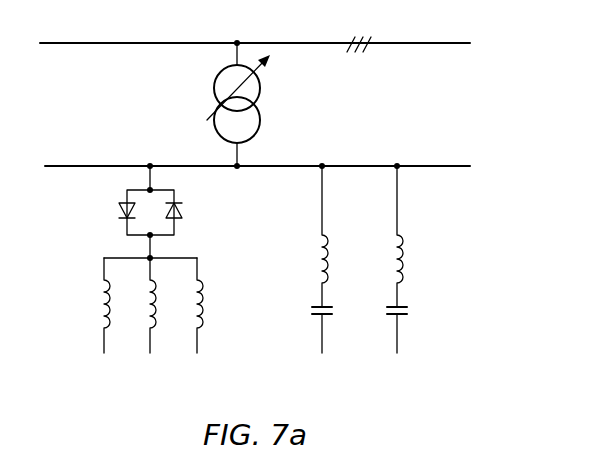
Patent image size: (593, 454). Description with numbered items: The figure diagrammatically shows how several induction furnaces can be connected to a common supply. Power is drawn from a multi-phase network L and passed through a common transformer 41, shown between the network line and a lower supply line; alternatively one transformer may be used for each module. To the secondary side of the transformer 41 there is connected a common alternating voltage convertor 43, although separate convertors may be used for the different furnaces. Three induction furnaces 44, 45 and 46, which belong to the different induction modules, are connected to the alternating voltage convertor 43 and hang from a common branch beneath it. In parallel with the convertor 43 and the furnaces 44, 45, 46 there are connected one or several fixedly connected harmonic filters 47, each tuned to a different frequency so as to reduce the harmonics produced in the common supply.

The multi-phase network L is at (318, 40).
The common transformer 41 is at (262, 105).
The alternating voltage convertor 43 is at (113, 202).
The induction furnace 44 is at (108, 330).
The induction furnace 45 is at (154, 330).
The induction furnace 46 is at (201, 330).
The harmonic filter 47 is at (425, 259).